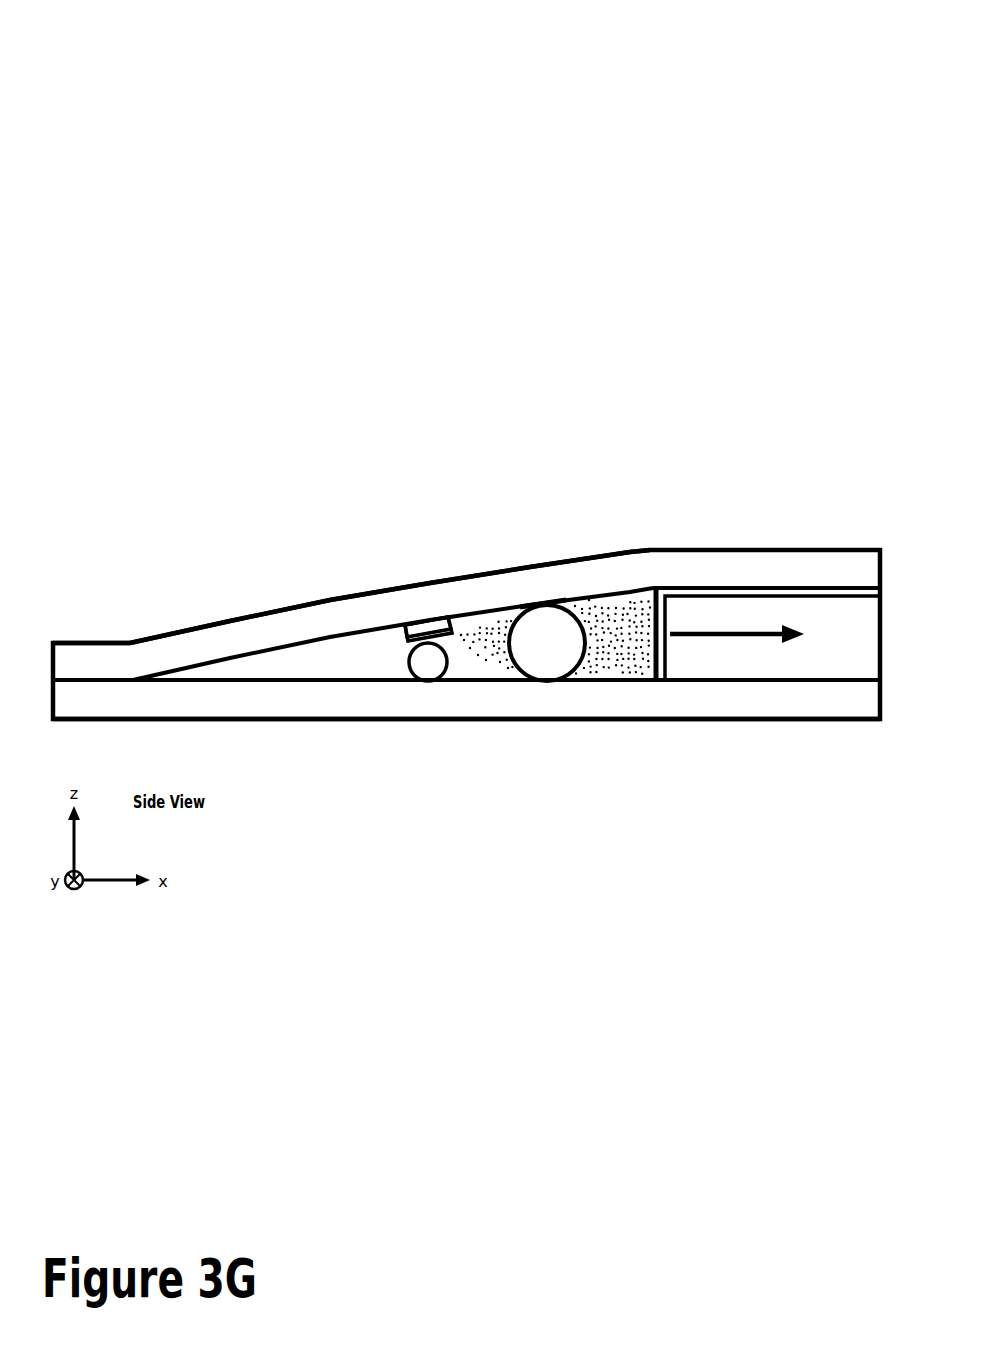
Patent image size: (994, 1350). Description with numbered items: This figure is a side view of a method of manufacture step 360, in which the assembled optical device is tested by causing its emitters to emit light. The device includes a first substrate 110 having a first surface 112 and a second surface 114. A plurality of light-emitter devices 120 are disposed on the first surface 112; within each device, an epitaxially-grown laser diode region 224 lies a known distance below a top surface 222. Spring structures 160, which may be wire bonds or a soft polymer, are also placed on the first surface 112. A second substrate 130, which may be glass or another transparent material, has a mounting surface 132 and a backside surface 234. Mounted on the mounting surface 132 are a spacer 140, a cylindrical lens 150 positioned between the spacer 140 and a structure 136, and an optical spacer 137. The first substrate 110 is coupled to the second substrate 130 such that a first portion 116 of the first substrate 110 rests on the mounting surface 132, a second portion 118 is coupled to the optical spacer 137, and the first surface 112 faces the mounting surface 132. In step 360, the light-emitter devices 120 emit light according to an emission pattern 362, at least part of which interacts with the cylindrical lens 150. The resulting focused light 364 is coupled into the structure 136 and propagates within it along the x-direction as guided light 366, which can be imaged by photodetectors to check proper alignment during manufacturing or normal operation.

The method of manufacture step 360 is at (860, 96).
The first substrate 110 is at (85, 672).
The first surface 112 is at (327, 644).
The second surface 114 is at (263, 610).
The first portion 116 is at (82, 680).
The second portion 118 is at (793, 587).
The light-emitter devices 120 is at (406, 633).
The second substrate 130 is at (85, 710).
The mounting surface 132 is at (343, 680).
The structure 136 is at (835, 623).
The optical spacer 137 is at (653, 597).
The spacer 140 is at (415, 673).
The cylindrical lens 150 is at (573, 672).
The spring structures 160 is at (527, 605).
The top surface 222 is at (410, 643).
The epitaxially-grown laser diode region 224 is at (407, 638).
The backside surface 234 is at (242, 720).
The emission pattern 362 is at (497, 652).
The focused light 364 is at (607, 672).
The guided light 366 is at (731, 636).